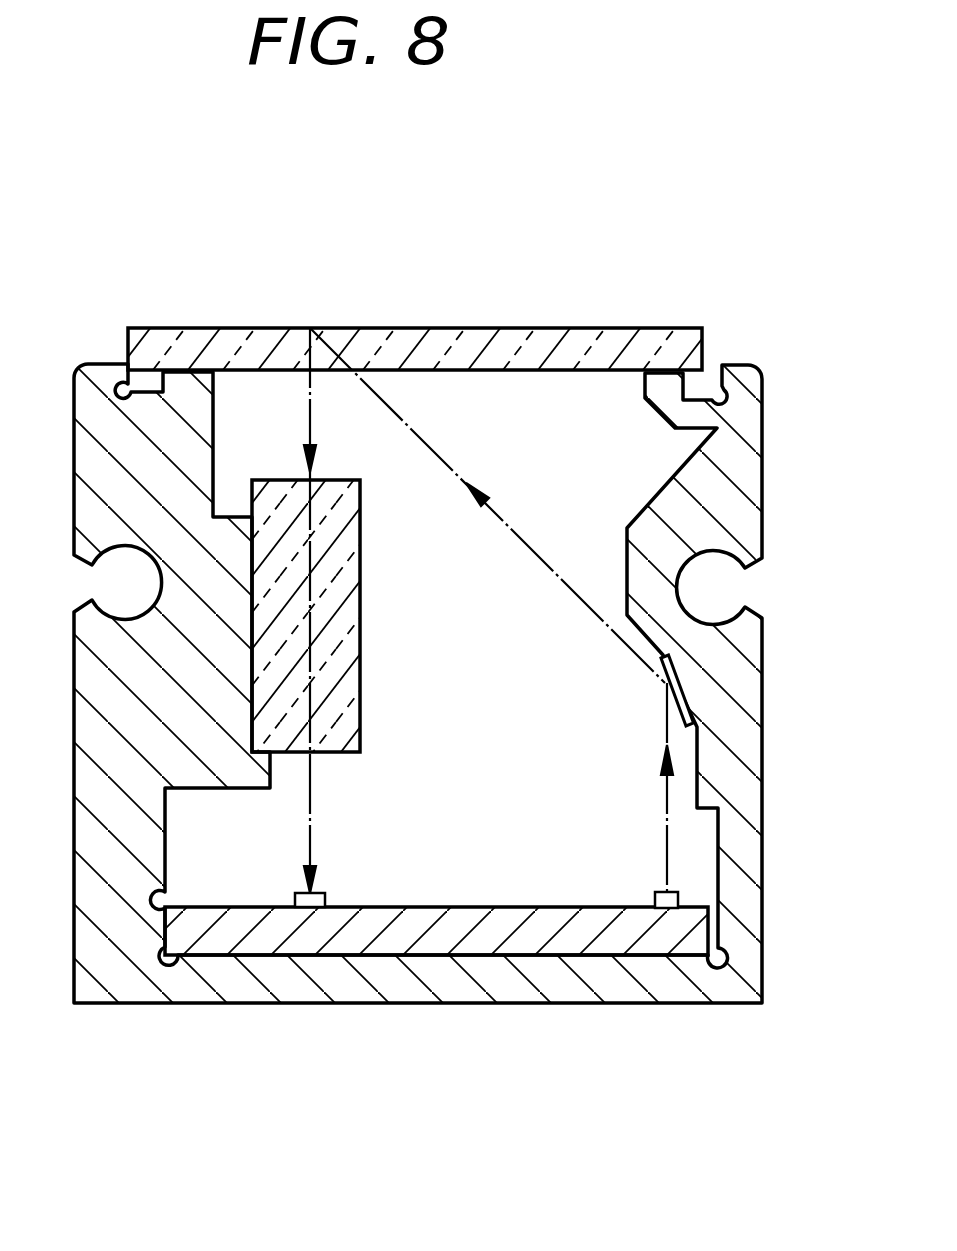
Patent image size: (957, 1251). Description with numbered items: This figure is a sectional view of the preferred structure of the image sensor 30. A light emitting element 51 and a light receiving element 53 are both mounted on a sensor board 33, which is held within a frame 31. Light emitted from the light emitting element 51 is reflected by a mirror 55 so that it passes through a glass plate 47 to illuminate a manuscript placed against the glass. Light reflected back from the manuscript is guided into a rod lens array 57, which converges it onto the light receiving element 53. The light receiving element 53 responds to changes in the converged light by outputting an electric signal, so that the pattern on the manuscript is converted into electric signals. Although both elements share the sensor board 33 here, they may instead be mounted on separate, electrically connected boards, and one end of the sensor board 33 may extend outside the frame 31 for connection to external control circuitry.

The image sensor 30 is at (471, 674).
The frame 31 is at (743, 697).
The sensor board 33 is at (433, 942).
The glass plate 47 is at (411, 345).
The light emitting element 51 is at (655, 900).
The light receiving element 53 is at (325, 900).
The mirror 55 is at (693, 713).
The rod lens array 57 is at (347, 690).